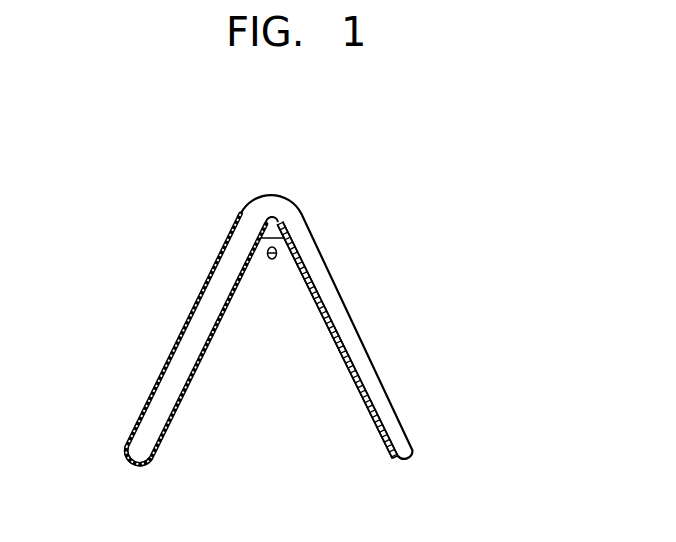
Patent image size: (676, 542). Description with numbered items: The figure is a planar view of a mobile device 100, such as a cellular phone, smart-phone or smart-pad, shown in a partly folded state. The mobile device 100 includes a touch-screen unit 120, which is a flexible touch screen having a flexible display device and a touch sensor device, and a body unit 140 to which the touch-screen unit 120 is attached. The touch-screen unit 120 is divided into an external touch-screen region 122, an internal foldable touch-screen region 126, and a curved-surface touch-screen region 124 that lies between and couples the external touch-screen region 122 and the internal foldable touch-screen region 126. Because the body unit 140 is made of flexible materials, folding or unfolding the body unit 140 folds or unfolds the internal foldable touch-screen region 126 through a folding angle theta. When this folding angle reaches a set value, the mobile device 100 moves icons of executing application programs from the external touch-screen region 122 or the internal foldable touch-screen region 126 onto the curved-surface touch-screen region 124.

The mobile device 100 is at (291, 126).
The touch-screen unit 120 is at (381, 432).
The external touch-screen region 122 is at (196, 288).
The curved-surface touch-screen region 124 is at (121, 450).
The internal foldable touch-screen region 126 is at (337, 350).
The body unit 140 is at (358, 353).